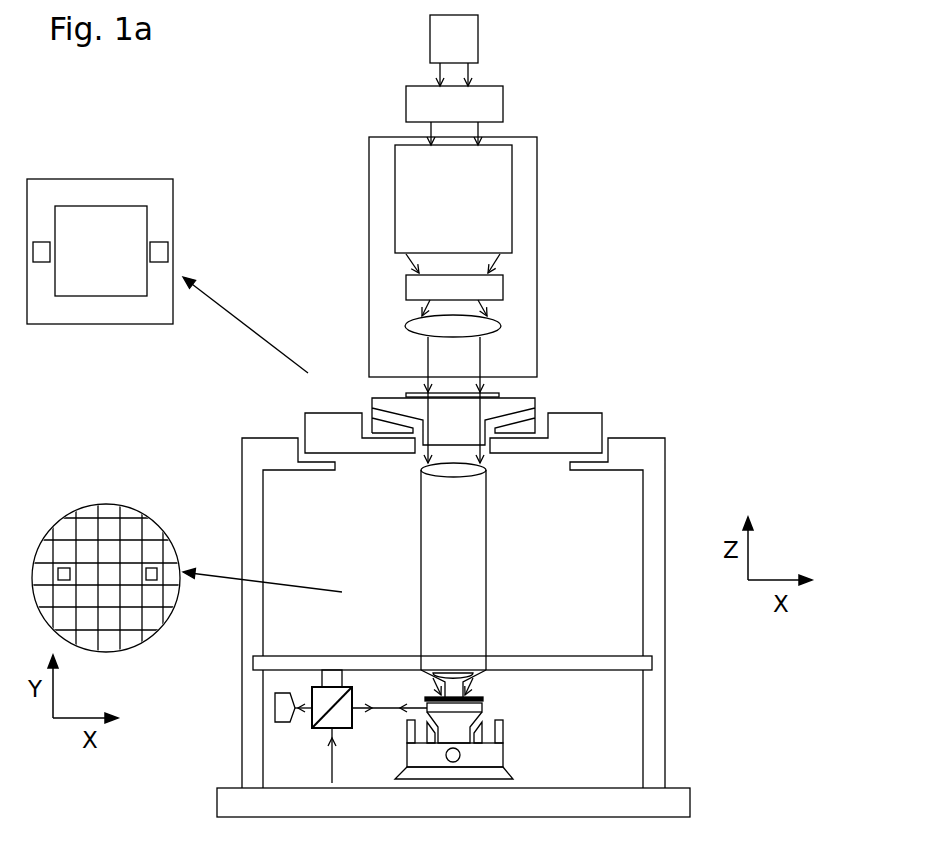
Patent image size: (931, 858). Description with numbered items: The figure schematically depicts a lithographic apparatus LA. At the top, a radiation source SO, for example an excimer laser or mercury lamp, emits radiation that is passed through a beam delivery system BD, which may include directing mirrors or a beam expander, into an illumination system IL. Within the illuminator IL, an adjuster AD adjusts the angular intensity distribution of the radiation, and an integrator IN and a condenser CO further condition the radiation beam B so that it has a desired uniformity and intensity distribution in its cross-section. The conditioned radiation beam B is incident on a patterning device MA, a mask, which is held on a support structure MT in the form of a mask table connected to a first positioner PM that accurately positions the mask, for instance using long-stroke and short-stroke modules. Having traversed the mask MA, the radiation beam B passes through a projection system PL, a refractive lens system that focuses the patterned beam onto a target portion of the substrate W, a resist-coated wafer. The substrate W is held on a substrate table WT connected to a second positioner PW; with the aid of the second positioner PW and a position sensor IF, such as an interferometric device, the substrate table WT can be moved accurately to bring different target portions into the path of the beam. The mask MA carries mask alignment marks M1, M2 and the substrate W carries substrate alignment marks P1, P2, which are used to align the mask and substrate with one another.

The radiation source SO is at (478, 43).
The beam delivery system BD is at (503, 108).
The illumination system IL is at (537, 162).
The adjuster AD is at (512, 208).
The integrator IN is at (503, 285).
The condenser CO is at (500, 323).
The radiation beam B is at (457, 388).
The patterning device MA is at (406, 395).
The mask alignment mark M1 is at (163, 242).
The mask alignment mark M2 is at (38, 242).
The support structure MT is at (535, 405).
The first positioner PM is at (306, 413).
The projection system PL is at (487, 557).
The substrate W is at (430, 699).
The substrate alignment mark P1 is at (62, 568).
The substrate alignment mark P2 is at (152, 565).
The substrate table WT is at (487, 705).
The second positioner PW is at (503, 757).
The position sensor IF is at (303, 733).
The lithographic apparatus LA is at (666, 265).